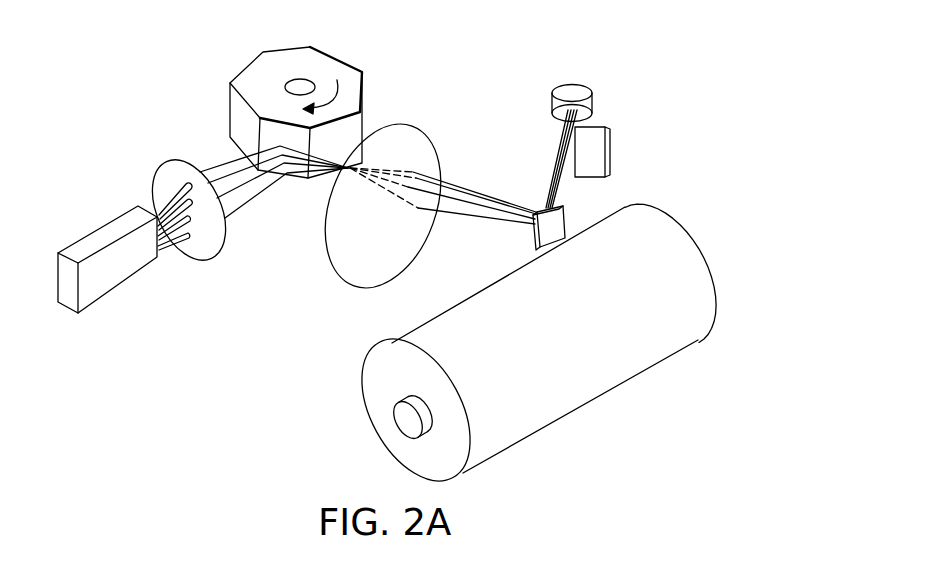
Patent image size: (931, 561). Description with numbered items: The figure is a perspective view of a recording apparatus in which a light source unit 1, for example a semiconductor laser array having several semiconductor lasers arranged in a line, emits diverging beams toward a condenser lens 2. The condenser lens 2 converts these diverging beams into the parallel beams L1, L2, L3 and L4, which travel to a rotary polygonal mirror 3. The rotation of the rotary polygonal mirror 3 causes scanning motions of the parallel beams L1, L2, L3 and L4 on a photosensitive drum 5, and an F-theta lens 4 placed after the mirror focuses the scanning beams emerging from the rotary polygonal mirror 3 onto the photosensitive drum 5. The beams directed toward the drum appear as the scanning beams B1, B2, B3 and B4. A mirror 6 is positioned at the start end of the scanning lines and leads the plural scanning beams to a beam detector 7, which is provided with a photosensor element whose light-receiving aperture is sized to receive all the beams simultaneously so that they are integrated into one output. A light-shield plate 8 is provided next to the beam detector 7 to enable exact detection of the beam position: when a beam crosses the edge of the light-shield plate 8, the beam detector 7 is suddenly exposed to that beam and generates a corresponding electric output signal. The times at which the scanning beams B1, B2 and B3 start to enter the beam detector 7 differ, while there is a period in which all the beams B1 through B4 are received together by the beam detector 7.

The light source unit 1 is at (102, 290).
The condenser lens 2 is at (203, 252).
The rotary polygonal mirror 3 is at (333, 62).
The F-theta lens 4 is at (406, 131).
The photosensitive drum 5 is at (652, 215).
The mirror 6 is at (545, 210).
The beam detector 7 is at (580, 90).
The light-shield plate 8 is at (606, 144).
The parallel beam L1 is at (240, 208).
The parallel beam L2 is at (248, 190).
The parallel beam L3 is at (220, 178).
The parallel beam L4 is at (232, 162).
The scanning beam B1 is at (459, 174).
The scanning beam B2 is at (473, 186).
The scanning beam B3 is at (460, 204).
The scanning beam B4 is at (485, 223).